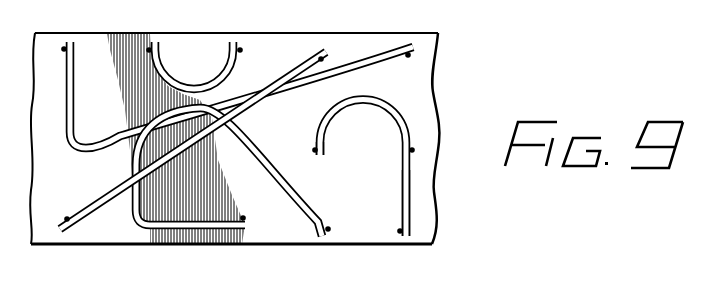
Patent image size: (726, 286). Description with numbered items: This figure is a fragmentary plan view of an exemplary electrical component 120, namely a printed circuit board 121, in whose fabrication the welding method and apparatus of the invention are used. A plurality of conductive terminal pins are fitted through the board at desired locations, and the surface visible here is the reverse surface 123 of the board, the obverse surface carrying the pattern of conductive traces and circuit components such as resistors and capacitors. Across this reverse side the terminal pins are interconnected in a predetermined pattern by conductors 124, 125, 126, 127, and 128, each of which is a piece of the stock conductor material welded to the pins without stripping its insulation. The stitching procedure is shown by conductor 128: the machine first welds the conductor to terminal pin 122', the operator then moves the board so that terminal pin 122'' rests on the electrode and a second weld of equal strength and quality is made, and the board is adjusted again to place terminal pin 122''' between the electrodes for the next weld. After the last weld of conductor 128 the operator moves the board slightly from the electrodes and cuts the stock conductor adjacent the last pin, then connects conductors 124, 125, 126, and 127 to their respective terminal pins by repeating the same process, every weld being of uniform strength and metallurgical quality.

The electrical component 120 is at (234, 21).
The printed circuit board 121 is at (295, 33).
The terminal pin 122' is at (442, 230).
The terminal pin 122'' is at (410, 168).
The terminal pin 122''' is at (350, 162).
The reverse surface 123 is at (437, 88).
The conductor 124 is at (79, 56).
The conductor 125 is at (163, 49).
The conductor 126 is at (88, 216).
The conductor 127 is at (257, 105).
The conductor 128 is at (409, 191).